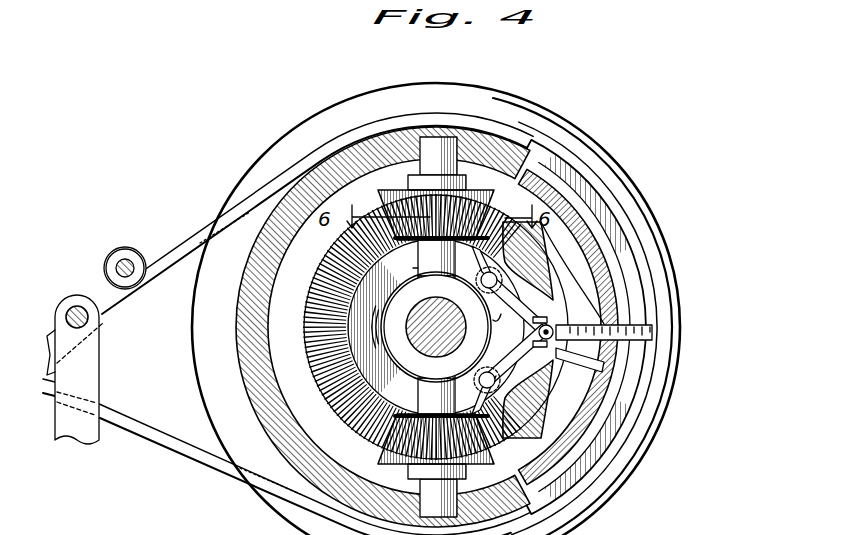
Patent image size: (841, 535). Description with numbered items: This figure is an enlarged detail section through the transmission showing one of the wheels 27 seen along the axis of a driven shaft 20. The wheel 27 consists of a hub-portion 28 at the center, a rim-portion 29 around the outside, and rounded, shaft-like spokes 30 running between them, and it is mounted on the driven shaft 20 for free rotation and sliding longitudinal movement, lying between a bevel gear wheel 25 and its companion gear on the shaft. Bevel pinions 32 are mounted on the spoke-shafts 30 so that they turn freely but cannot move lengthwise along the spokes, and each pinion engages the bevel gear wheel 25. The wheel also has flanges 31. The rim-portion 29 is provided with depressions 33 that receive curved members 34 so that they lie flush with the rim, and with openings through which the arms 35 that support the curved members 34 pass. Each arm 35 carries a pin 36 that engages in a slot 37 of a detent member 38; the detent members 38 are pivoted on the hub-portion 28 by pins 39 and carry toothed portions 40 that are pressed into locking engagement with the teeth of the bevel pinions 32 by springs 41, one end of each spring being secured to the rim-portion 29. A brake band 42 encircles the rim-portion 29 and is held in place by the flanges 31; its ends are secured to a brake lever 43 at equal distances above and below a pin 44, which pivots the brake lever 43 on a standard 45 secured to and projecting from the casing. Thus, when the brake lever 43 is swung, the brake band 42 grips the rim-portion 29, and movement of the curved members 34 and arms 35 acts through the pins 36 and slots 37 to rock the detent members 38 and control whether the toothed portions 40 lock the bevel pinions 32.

The driven shaft 20 is at (406, 327).
The bevel gear wheel 25 is at (333, 372).
The wheel 27 is at (322, 280).
The hub-portion 28 is at (393, 345).
The rim-portion 29 is at (247, 401).
The spoke 30 is at (422, 160).
The flange 31 is at (583, 132).
The bevel pinion 32 is at (385, 202).
The depression 33 is at (600, 237).
The curved member 34 is at (650, 258).
The arm 35 is at (627, 324).
The pin 36 is at (556, 330).
The slot 37 is at (560, 316).
The detent member 38 is at (498, 288).
The pin 39 is at (520, 323).
The toothed portion 40 is at (480, 208).
The spring 41 is at (543, 272).
The brake band 42 is at (199, 242).
The brake lever 43 is at (104, 283).
The pin 44 is at (72, 306).
The standard 45 is at (87, 357).